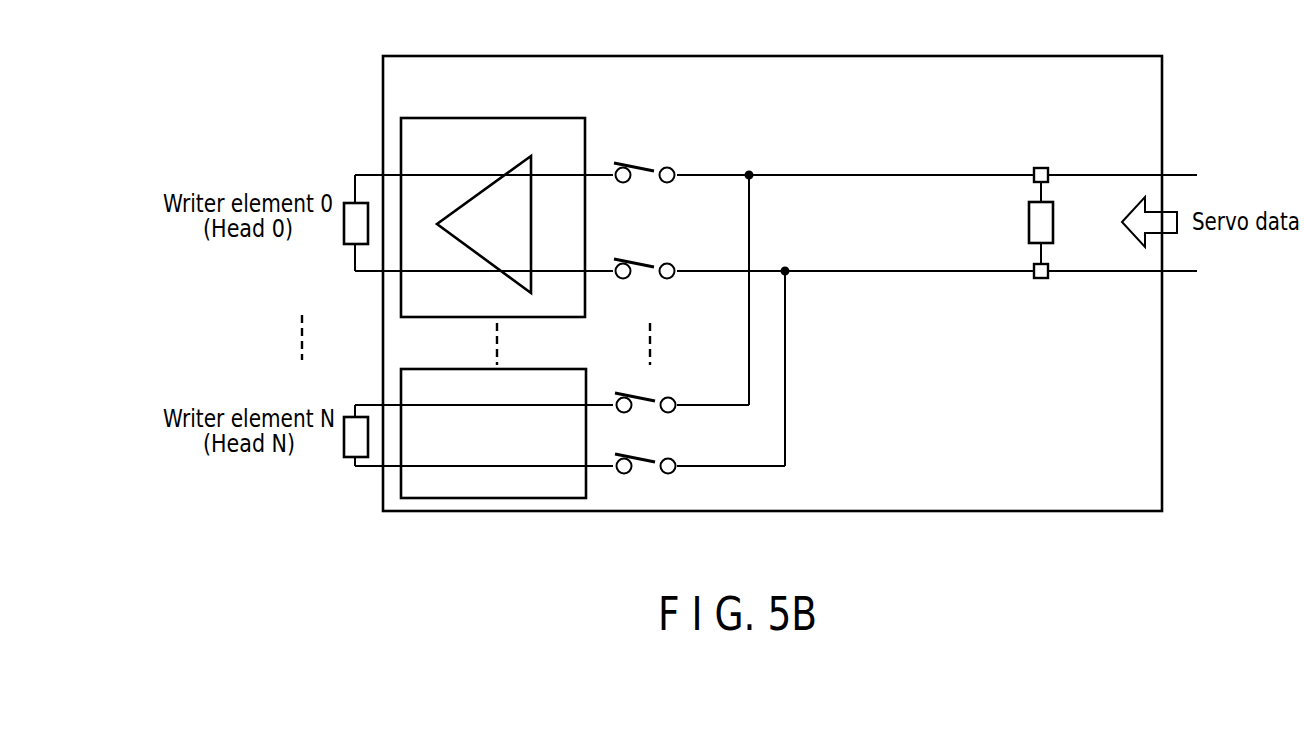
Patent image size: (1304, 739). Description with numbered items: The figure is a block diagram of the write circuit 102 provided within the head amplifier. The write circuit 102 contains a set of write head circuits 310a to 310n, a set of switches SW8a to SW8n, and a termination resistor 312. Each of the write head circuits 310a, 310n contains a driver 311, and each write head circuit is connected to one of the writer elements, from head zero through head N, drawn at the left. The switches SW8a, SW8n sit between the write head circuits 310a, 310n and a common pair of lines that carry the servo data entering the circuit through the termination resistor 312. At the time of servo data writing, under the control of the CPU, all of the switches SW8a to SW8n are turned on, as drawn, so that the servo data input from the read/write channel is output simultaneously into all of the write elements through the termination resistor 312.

The write circuit 102 is at (580, 56).
The write head circuit 310a is at (503, 118).
The write head circuit 310n is at (528, 369).
The driver 311 is at (514, 285).
The termination resistor 312 is at (1028, 224).
The switch SW8a is at (673, 232).
The switch SW8n is at (680, 444).